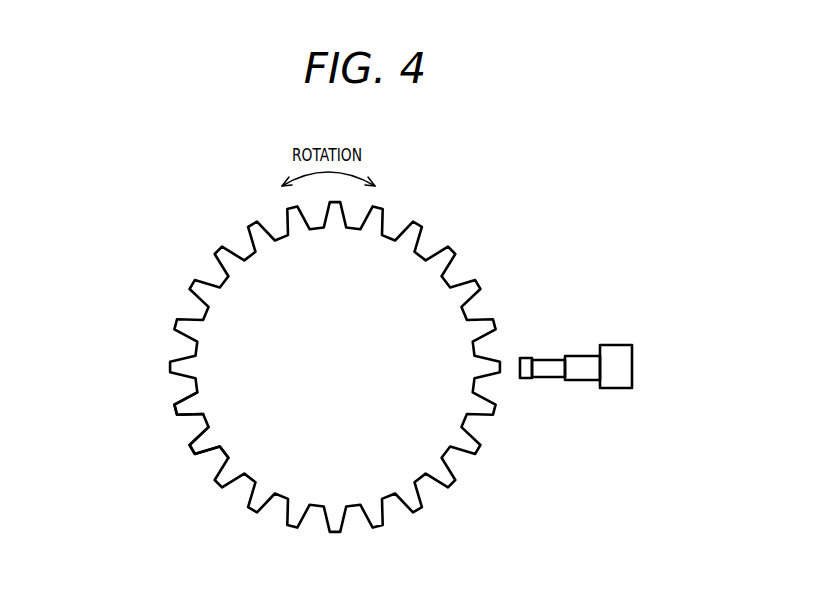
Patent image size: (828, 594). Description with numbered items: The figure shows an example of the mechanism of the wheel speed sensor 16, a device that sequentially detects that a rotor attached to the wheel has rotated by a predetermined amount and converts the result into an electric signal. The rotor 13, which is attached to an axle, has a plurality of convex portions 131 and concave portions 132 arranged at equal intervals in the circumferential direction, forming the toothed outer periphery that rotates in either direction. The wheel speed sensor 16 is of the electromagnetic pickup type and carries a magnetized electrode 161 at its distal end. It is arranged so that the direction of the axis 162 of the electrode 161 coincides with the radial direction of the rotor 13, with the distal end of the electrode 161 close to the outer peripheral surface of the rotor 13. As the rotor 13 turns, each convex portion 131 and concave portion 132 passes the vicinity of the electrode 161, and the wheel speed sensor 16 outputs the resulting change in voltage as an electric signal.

The rotor 13 is at (349, 388).
The convex portion 131 is at (153, 441).
The concave portion 132 is at (188, 477).
The wheel speed sensor 16 is at (574, 372).
The electrode 161 is at (545, 412).
The axis 162 is at (572, 413).